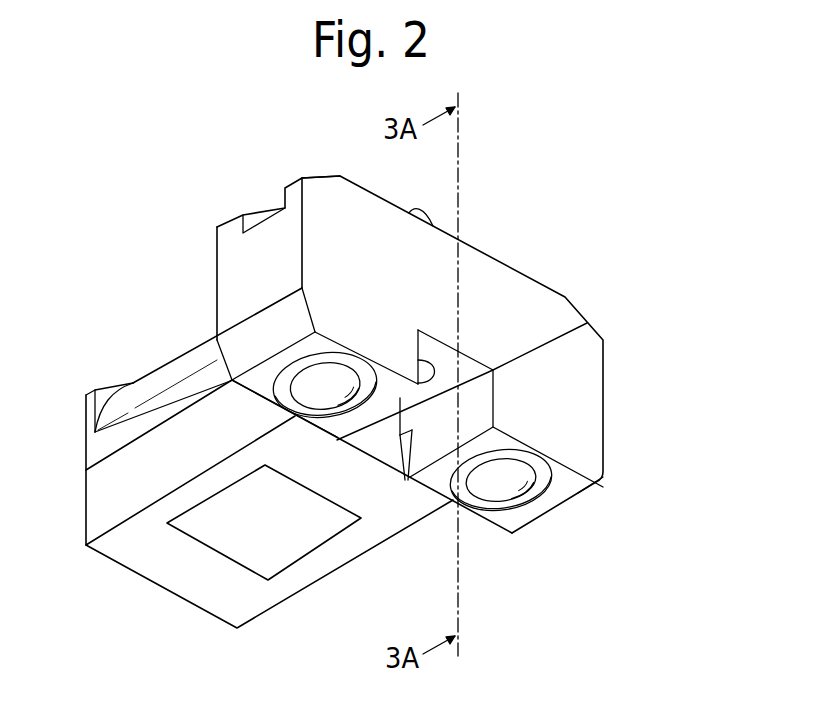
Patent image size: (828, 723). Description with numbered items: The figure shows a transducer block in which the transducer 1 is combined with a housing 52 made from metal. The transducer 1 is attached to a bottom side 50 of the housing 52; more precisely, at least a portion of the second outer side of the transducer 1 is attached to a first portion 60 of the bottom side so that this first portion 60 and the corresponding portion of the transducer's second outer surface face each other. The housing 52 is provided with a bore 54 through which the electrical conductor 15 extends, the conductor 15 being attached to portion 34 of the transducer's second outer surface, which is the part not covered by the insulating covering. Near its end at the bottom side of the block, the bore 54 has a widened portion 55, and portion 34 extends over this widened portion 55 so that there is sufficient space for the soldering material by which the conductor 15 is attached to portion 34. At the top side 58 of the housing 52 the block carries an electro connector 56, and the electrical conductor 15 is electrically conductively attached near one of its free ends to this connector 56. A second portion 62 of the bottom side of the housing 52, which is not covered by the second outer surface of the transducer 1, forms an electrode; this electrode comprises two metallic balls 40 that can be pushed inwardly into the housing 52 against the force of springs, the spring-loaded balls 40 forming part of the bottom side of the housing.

The transducer 1 is at (373, 401).
The electrical conductor 15 is at (403, 417).
The portion of the second outer surface 34 is at (393, 458).
The metallic balls 40 is at (528, 492).
The bottom side of the housing 50 is at (272, 365).
The housing 52 is at (530, 303).
The bore 54 is at (582, 330).
The widened portion of the bore 55 is at (483, 402).
The electro connector 56 is at (418, 211).
The top side of the housing 58 is at (352, 178).
The first portion of the bottom side of the housing 60 is at (220, 605).
The second portion of the bottom side of the housing 62 is at (580, 486).